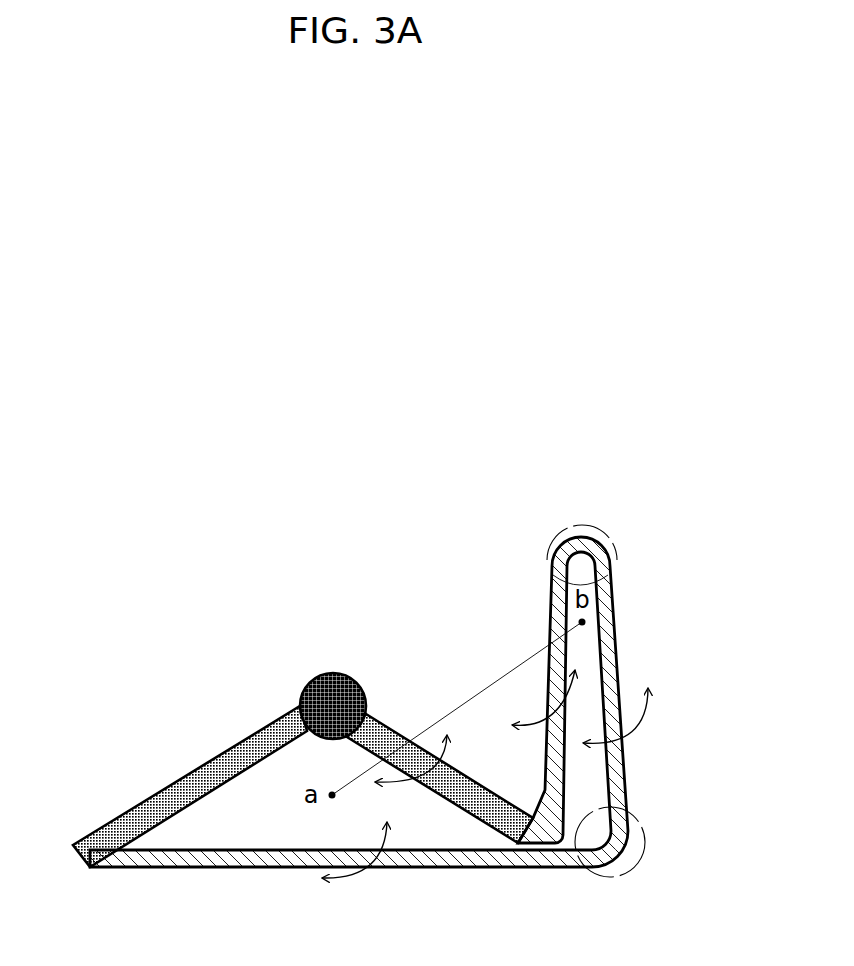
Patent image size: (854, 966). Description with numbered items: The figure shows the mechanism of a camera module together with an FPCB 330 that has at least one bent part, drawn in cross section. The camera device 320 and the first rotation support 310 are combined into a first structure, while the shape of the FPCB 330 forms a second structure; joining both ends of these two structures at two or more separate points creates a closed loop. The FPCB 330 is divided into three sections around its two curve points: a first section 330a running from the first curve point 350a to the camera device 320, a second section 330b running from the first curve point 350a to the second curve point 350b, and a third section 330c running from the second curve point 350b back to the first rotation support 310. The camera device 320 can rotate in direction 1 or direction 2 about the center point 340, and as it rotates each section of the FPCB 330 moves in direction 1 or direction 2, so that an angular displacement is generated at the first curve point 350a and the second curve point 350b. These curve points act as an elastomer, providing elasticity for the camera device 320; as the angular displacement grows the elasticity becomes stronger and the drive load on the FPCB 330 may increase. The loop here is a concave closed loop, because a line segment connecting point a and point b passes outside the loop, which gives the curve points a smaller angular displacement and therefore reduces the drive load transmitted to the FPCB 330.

The first rotation support 310 is at (199, 783).
The camera device 320 is at (373, 728).
The FPCB 330 is at (391, 730).
The first section 330a is at (559, 593).
The second section 330b is at (600, 597).
The third section 330c is at (233, 855).
The center point 340 is at (330, 690).
The first curve point 350a is at (593, 518).
The second curve point 350b is at (607, 878).
The direction 1 is at (476, 783).
The direction 2 is at (532, 743).